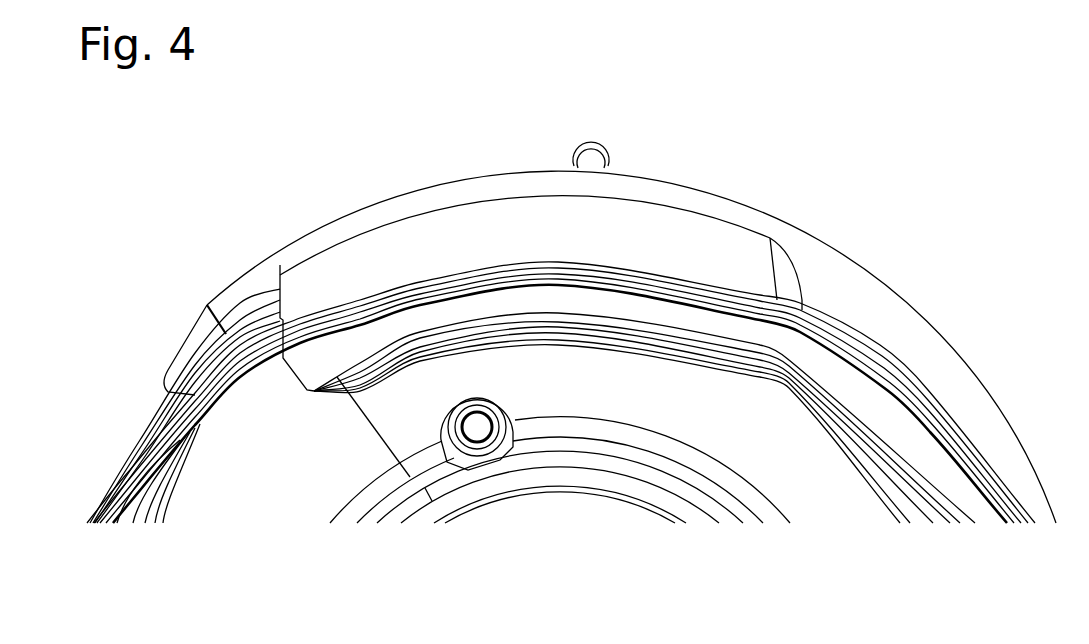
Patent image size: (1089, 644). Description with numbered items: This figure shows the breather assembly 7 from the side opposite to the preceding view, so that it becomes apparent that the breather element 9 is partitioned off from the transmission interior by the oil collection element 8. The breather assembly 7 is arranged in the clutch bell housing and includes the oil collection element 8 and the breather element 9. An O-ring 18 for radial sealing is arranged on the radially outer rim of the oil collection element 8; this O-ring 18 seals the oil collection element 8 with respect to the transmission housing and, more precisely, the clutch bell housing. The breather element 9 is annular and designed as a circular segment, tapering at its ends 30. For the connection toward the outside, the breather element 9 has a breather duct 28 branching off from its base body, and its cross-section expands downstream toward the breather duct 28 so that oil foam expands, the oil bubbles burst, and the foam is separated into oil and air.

The breather assembly 7 is at (382, 164).
The oil collection element 8 is at (228, 470).
The breather element 9 is at (345, 223).
The O-ring 18 is at (927, 403).
The breather duct 28 is at (606, 154).
The ends 30 is at (160, 336).